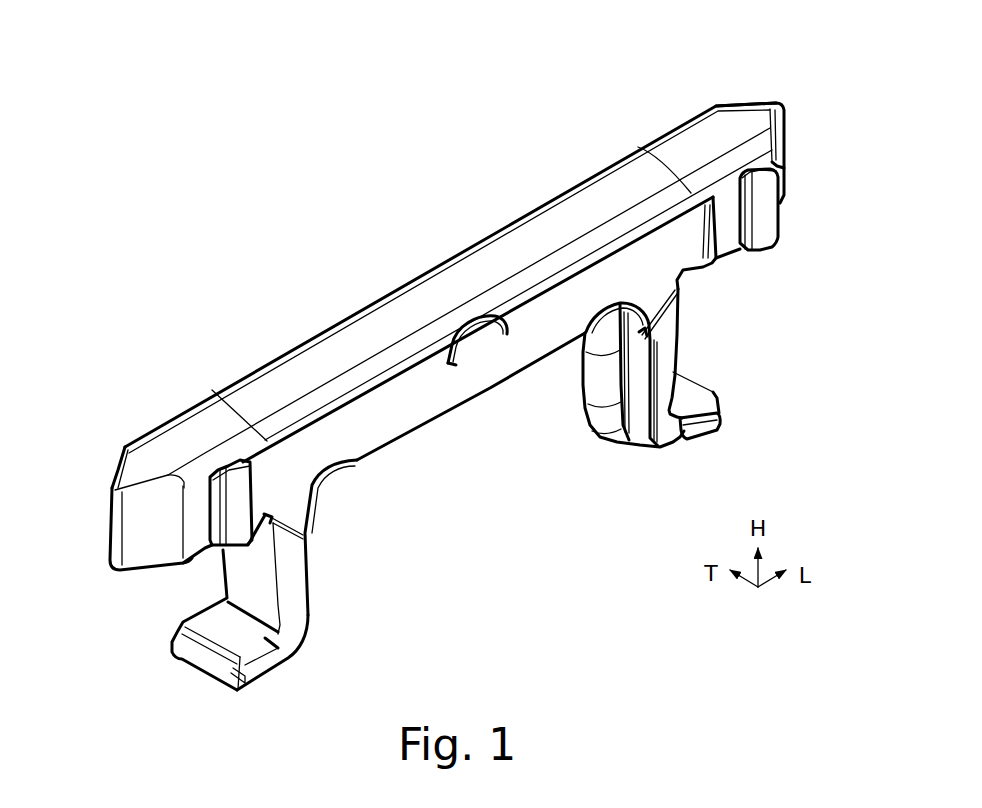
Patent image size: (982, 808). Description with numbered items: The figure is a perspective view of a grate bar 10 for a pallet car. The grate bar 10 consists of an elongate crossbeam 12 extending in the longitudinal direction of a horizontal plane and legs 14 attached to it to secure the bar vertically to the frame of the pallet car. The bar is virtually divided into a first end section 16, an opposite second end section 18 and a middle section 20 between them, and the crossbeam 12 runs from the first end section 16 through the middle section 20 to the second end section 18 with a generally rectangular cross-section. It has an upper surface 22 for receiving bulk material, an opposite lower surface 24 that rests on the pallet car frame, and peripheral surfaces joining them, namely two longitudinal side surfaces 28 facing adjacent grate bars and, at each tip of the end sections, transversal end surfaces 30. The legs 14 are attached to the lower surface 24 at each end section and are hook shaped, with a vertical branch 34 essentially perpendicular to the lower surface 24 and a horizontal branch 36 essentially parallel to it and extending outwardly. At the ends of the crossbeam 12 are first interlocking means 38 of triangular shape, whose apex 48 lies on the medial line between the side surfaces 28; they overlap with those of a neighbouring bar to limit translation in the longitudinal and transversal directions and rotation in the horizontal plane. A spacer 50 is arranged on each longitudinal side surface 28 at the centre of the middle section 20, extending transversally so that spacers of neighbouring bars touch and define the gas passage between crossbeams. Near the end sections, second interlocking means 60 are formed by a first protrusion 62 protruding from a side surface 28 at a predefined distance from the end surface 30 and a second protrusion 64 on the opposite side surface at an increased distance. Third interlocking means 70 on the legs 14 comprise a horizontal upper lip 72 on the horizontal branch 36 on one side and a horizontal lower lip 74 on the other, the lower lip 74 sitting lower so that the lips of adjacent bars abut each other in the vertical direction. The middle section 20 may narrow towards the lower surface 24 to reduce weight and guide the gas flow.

The grate bar 10 is at (449, 373).
The crossbeam 12 is at (435, 398).
The legs 14 is at (324, 575).
The first end section 16 is at (175, 400).
The second end section 18 is at (691, 108).
The middle section 20 is at (307, 323).
The upper surface 22 is at (358, 330).
The lower surface 24 is at (402, 443).
The longitudinal side surfaces 28 is at (533, 343).
The transversal end surfaces 30 is at (133, 531).
The vertical branch 34 is at (297, 577).
The horizontal branch 36 is at (297, 622).
The first interlocking means 38 is at (110, 452).
The apex 48 is at (112, 484).
The spacer 50 is at (486, 342).
The second interlocking means 60 is at (743, 285).
The first protrusion 62 is at (768, 228).
The second protrusion 64 is at (240, 541).
The third interlocking means 70 is at (435, 574).
The upper lip 72 is at (280, 667).
The lower lip 74 is at (173, 639).